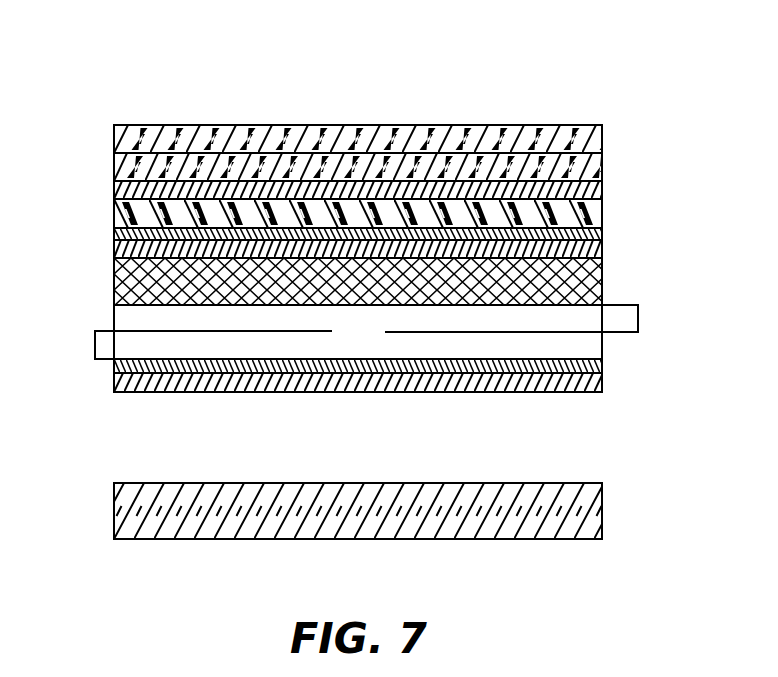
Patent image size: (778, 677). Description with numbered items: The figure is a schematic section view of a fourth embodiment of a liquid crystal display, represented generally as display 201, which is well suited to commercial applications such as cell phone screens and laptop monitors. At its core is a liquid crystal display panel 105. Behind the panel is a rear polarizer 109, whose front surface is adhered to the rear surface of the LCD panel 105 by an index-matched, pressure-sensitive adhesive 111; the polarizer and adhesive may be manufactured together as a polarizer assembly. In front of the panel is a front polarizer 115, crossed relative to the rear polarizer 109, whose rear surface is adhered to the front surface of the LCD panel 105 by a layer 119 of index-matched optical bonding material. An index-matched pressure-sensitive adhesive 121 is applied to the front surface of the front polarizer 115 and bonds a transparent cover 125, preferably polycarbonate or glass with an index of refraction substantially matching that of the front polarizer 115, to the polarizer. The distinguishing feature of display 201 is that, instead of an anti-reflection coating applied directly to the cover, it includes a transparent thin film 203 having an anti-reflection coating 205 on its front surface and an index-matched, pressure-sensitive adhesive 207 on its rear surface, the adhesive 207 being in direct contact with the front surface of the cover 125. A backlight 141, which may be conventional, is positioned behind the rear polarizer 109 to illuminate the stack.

The liquid crystal display 201 is at (358, 204).
The transparent thin film 203 is at (114, 166).
The anti-reflection coating 205 is at (602, 140).
The index-matched pressure-sensitive adhesive 207 is at (602, 187).
The transparent cover 125 is at (114, 212).
The index-matched pressure-sensitive adhesive 121 is at (602, 232).
The front polarizer 115 is at (114, 250).
The layer of index-matched optical bonding material 119 is at (602, 278).
The liquid crystal display panel 105 is at (377, 350).
The index-matched pressure-sensitive adhesive 111 is at (602, 363).
The rear polarizer 109 is at (114, 383).
The backlight 141 is at (602, 510).